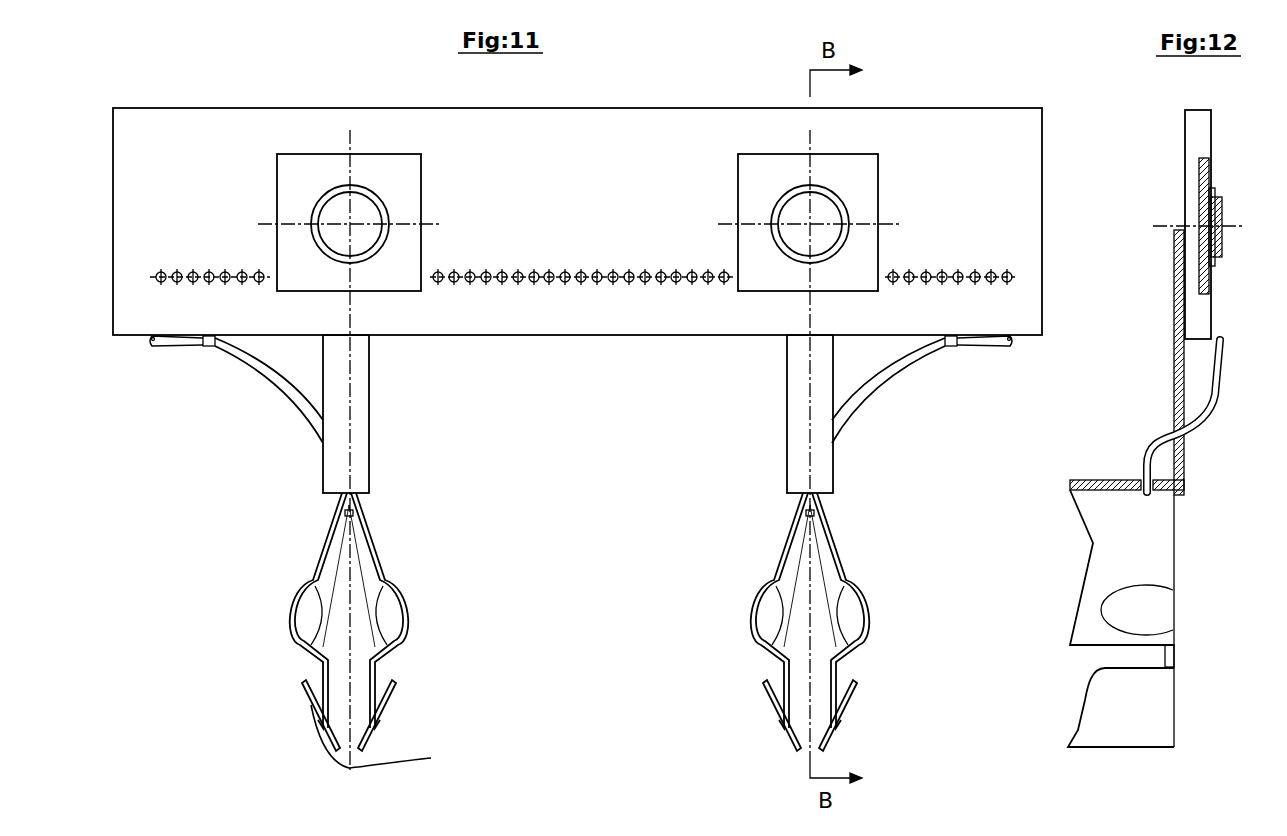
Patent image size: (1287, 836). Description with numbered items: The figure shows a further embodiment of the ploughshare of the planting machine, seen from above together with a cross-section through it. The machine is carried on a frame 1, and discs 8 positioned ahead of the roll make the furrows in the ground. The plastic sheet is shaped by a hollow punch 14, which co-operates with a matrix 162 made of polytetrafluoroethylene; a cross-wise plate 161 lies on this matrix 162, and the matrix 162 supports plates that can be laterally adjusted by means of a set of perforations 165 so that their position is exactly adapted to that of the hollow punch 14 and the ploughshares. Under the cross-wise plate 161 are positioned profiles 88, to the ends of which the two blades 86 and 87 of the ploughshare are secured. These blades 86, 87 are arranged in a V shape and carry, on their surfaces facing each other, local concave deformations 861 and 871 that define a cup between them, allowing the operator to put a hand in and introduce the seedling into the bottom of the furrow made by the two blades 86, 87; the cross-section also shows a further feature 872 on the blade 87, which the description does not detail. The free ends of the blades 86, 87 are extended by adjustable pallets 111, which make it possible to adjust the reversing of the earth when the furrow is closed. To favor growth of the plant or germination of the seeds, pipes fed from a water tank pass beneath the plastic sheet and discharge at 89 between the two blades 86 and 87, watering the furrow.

In FIG. 12, the frame 1 is at (1140, 708).
In FIG. 12, the disc 8 is at (1178, 356).
In FIG. 11, the hollow punch 14 is at (820, 212).
In FIG. 11, the cross-wise plate 161 is at (863, 205).
In FIG. 12, the cross-wise plate 161 is at (1222, 200).
In FIG. 11, the matrix 162 is at (1017, 300).
In FIG. 12, the matrix 162 is at (1211, 266).
In FIG. 11, the set of perforations 165 is at (928, 268).
In FIG. 11, the blade 86 is at (279, 622).
In FIG. 11, the local deformation 861 is at (264, 615).
In FIG. 11, the blade 87 is at (420, 622).
In FIG. 12, the blade 87 is at (1152, 538).
In FIG. 11, the local deformation 871 is at (422, 615).
In FIG. 12, the recess 872 is at (1147, 607).
In FIG. 11, the profile 88 is at (360, 448).
In FIG. 12, the water discharge 89 is at (1152, 448).
In FIG. 11, the pallet 111 is at (390, 743).